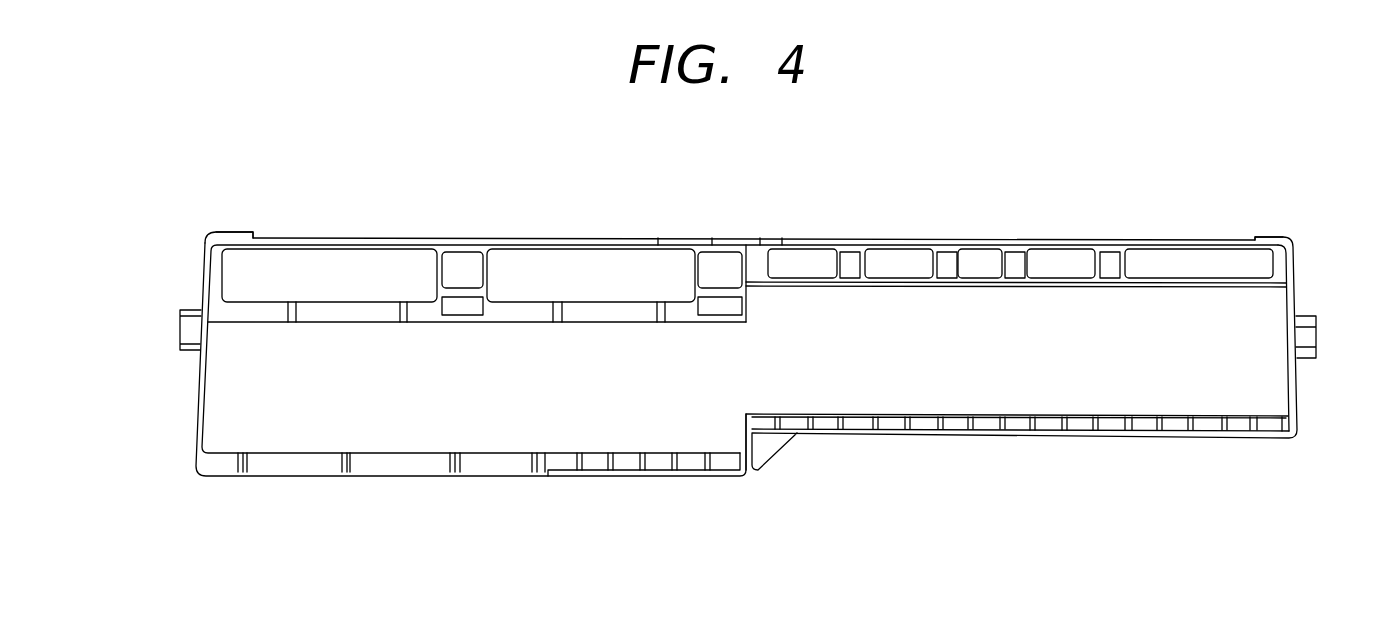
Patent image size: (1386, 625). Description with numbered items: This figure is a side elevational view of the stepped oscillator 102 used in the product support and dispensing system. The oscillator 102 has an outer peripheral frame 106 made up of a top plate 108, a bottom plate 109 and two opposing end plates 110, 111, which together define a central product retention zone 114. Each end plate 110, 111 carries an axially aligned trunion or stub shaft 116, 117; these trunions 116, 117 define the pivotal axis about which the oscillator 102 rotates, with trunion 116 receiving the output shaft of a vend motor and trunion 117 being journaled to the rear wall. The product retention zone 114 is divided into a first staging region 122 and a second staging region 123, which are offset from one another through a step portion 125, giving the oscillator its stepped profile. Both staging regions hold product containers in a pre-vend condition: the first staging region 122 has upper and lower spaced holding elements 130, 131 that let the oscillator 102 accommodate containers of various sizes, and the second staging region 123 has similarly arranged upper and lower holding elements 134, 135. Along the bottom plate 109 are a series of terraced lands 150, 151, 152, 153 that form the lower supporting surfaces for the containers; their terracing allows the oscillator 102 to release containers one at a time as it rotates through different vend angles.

The oscillator 102 is at (601, 205).
The outer peripheral frame 106 is at (1153, 218).
The top plate 108 is at (345, 238).
The bottom plate 109 is at (1203, 425).
The end plate 110 is at (200, 262).
The end plate 111 is at (1293, 268).
The central product retention zone 114 is at (235, 389).
The trunion 116 is at (190, 310).
The trunion 117 is at (1310, 318).
The first staging region 122 is at (326, 445).
The second staging region 123 is at (997, 395).
The step portion 125 is at (742, 447).
The upper holding element 130 is at (510, 322).
The lower holding element 131 is at (628, 455).
The upper holding element 134 is at (920, 288).
The lower holding element 135 is at (1175, 415).
The terraced land 150 is at (440, 430).
The terraced land 151 is at (557, 444).
The terraced land 152 is at (827, 405).
The terraced land 153 is at (1245, 408).